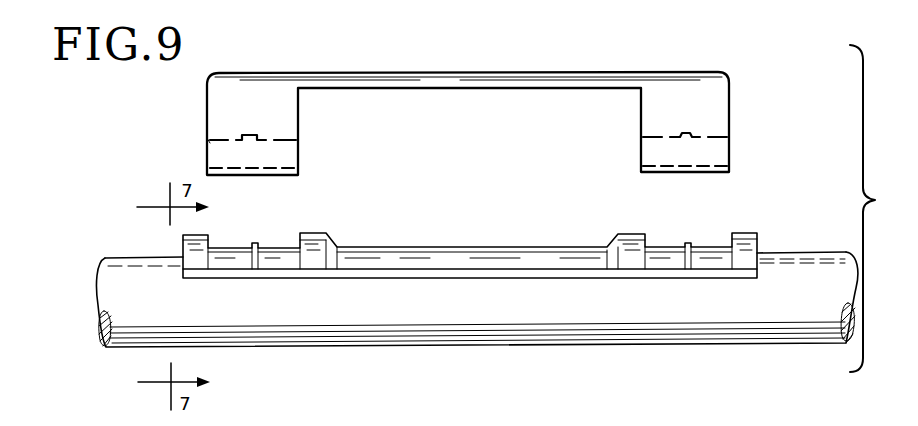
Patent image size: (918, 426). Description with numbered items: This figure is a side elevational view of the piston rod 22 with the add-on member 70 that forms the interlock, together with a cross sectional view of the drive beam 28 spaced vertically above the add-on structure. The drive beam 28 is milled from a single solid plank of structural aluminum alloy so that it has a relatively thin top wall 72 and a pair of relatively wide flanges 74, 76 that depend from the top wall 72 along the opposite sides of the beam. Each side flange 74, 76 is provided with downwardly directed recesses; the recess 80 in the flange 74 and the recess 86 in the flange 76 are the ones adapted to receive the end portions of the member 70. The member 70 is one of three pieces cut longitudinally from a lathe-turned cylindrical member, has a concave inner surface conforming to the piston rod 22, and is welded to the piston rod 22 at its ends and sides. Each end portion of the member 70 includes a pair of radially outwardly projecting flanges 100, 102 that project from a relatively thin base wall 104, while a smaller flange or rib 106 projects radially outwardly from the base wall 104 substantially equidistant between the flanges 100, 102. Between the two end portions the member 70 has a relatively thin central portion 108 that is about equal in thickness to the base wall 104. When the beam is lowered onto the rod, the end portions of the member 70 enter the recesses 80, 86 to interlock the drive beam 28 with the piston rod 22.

The piston rod 22 is at (437, 316).
The drive beam 28 is at (468, 88).
The member 70 is at (462, 250).
The top wall 72 is at (468, 92).
The flange 74 is at (655, 104).
The flange 76 is at (292, 112).
The recess 80 is at (665, 152).
The recess 86 is at (283, 156).
The flange 100 is at (318, 240).
The flange 102 is at (190, 260).
The base wall 104 is at (282, 245).
The rib 106 is at (255, 268).
The central portion 108 is at (512, 263).